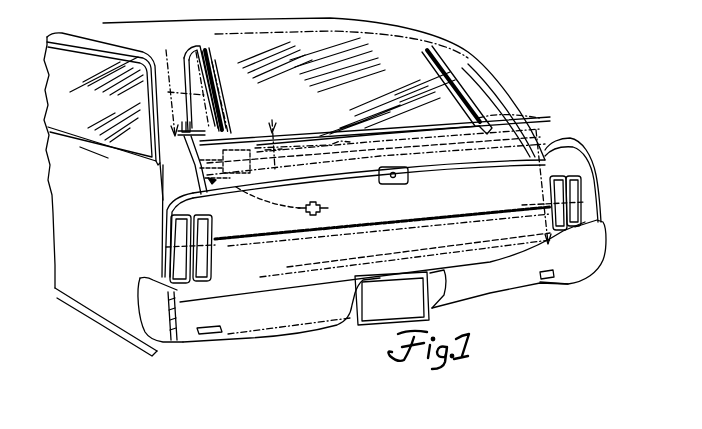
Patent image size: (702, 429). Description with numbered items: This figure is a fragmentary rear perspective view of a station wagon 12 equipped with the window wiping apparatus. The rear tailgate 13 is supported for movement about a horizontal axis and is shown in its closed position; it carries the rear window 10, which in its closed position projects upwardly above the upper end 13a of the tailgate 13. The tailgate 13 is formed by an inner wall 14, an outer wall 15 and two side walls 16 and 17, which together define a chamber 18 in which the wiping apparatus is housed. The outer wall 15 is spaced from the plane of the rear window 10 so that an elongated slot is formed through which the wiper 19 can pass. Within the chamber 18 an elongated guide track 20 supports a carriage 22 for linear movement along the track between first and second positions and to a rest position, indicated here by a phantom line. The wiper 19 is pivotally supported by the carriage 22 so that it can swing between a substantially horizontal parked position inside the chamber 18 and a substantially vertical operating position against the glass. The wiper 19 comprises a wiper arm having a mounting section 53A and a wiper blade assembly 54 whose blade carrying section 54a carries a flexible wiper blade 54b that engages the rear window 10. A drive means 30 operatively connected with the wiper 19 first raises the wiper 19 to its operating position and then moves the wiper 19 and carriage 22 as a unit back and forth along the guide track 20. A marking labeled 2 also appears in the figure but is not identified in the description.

The section line 2 is at (224, 110).
The rear window 10 is at (397, 53).
The station wagon 12 is at (328, 20).
The rear tailgate 13 is at (487, 235).
The upper end of the tailgate 13a is at (411, 127).
The inner wall 14 is at (287, 260).
The outer wall 15 is at (487, 132).
The side wall 16 is at (203, 285).
The side wall 17 is at (549, 245).
The chamber 18 is at (364, 143).
The wiper 19 is at (222, 53).
The guide track 20 is at (535, 119).
The carriage 22 is at (235, 175).
The drive means 30 is at (467, 172).
The mounting section 53A is at (234, 128).
The wiper blade assembly 54 is at (222, 55).
The blade carrying section 54a is at (218, 77).
The flexible wiper blade 54b is at (200, 53).